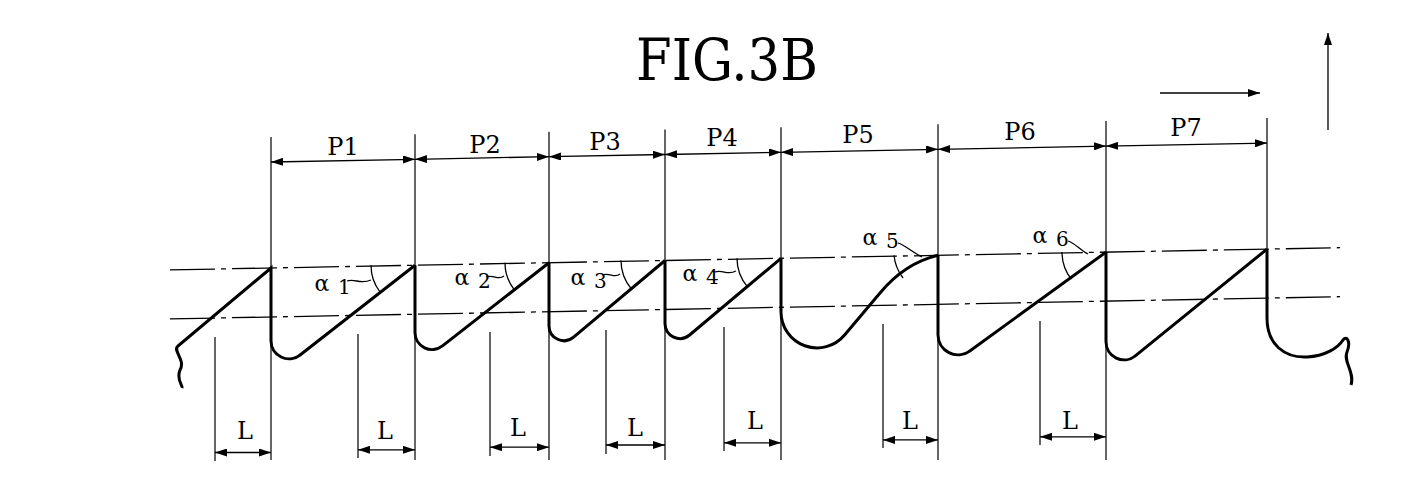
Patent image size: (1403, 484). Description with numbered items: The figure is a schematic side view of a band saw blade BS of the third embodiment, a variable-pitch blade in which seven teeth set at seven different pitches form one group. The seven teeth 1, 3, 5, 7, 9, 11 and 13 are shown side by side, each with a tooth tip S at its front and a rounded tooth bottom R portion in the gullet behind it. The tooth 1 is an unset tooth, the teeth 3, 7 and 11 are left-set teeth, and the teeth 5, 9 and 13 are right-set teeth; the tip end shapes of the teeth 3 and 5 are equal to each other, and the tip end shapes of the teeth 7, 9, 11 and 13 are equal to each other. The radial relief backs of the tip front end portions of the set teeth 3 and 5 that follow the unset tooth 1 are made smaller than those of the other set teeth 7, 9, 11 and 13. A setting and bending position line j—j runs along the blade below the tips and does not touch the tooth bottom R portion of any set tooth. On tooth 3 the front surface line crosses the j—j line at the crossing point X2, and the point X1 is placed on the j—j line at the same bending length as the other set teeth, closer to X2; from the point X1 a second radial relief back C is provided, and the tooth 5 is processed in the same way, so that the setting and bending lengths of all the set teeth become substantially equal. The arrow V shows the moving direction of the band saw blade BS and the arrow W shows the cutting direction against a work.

The unset tooth 1 is at (268, 268).
The left-set tooth 3 is at (1104, 251).
The right-set tooth 5 is at (936, 254).
The left-set tooth 7 is at (779, 257).
The right-set tooth 9 is at (663, 259).
The left-set tooth 11 is at (547, 262).
The right-set tooth 13 is at (413, 265).
The band saw blade BS is at (578, 115).
The tooth tip S is at (713, 235).
The tooth bottom R portion R is at (717, 316).
The second radial relief back C is at (891, 268).
The point X1 is at (1041, 306).
The crossing point X2 is at (1113, 297).
The setting and bending position j—j line j is at (756, 306).
The arrow v V is at (1201, 92).
The arrow w W is at (1328, 95).